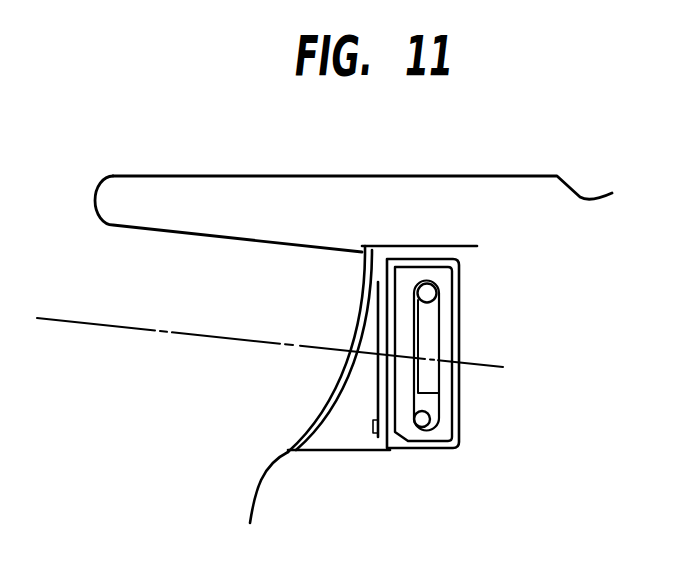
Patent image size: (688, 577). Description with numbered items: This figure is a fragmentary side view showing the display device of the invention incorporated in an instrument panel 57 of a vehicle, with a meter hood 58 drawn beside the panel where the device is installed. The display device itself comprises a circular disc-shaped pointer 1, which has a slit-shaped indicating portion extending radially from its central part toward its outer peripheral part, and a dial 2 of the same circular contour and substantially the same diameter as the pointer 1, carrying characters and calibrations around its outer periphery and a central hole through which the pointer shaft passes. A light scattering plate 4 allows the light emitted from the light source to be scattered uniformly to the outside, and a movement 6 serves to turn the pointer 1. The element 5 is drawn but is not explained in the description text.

The instrument panel 57 is at (510, 187).
The meter hood 58 is at (288, 452).
The pointer 1 is at (372, 420).
The dial 2 is at (383, 450).
The light scattering plate 4 is at (407, 450).
The lower pin 5 is at (430, 419).
The movement 6 is at (428, 352).